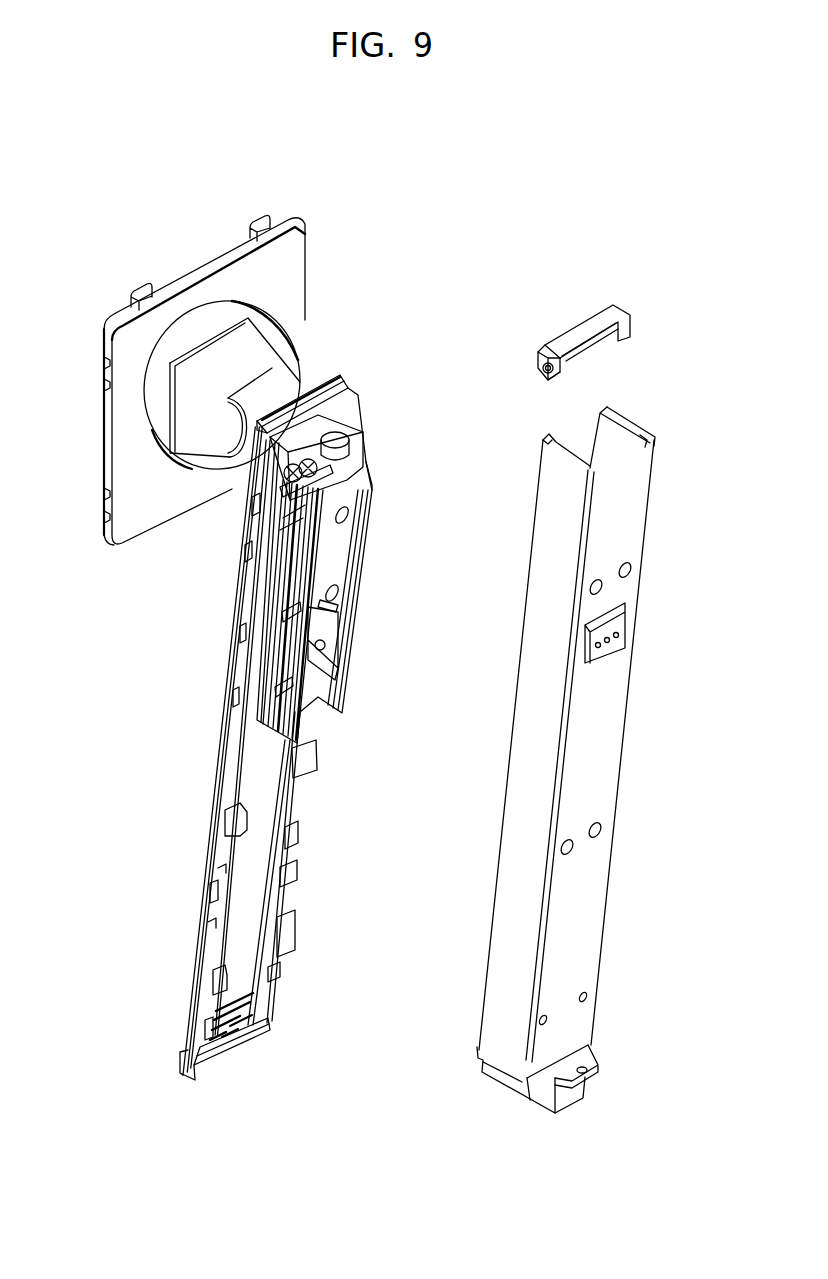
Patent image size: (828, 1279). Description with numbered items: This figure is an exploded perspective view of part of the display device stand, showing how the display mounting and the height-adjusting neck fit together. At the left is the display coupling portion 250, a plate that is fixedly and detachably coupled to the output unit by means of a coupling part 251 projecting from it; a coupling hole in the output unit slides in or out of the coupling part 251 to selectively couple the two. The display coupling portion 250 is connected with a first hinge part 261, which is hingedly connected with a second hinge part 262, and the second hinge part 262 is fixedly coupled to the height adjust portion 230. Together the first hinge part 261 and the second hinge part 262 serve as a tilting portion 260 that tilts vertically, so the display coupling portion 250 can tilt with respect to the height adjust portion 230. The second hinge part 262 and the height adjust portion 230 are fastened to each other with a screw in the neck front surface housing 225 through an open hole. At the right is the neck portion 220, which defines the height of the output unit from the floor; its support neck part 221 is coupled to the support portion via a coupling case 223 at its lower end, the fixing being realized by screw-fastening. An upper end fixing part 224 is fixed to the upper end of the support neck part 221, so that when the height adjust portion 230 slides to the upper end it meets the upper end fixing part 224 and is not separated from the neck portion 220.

The neck portion 220 is at (645, 725).
The support neck part 221 is at (605, 777).
The coupling case 223 is at (594, 1060).
The upper end fixing part 224 is at (580, 330).
The neck front surface housing 225 is at (232, 820).
The height adjust portion 230 is at (267, 595).
The display coupling portion 250 is at (123, 440).
The coupling part 251 is at (140, 291).
The tilting portion 260 is at (402, 280).
The first hinge part 261 is at (273, 334).
The second hinge part 262 is at (297, 383).